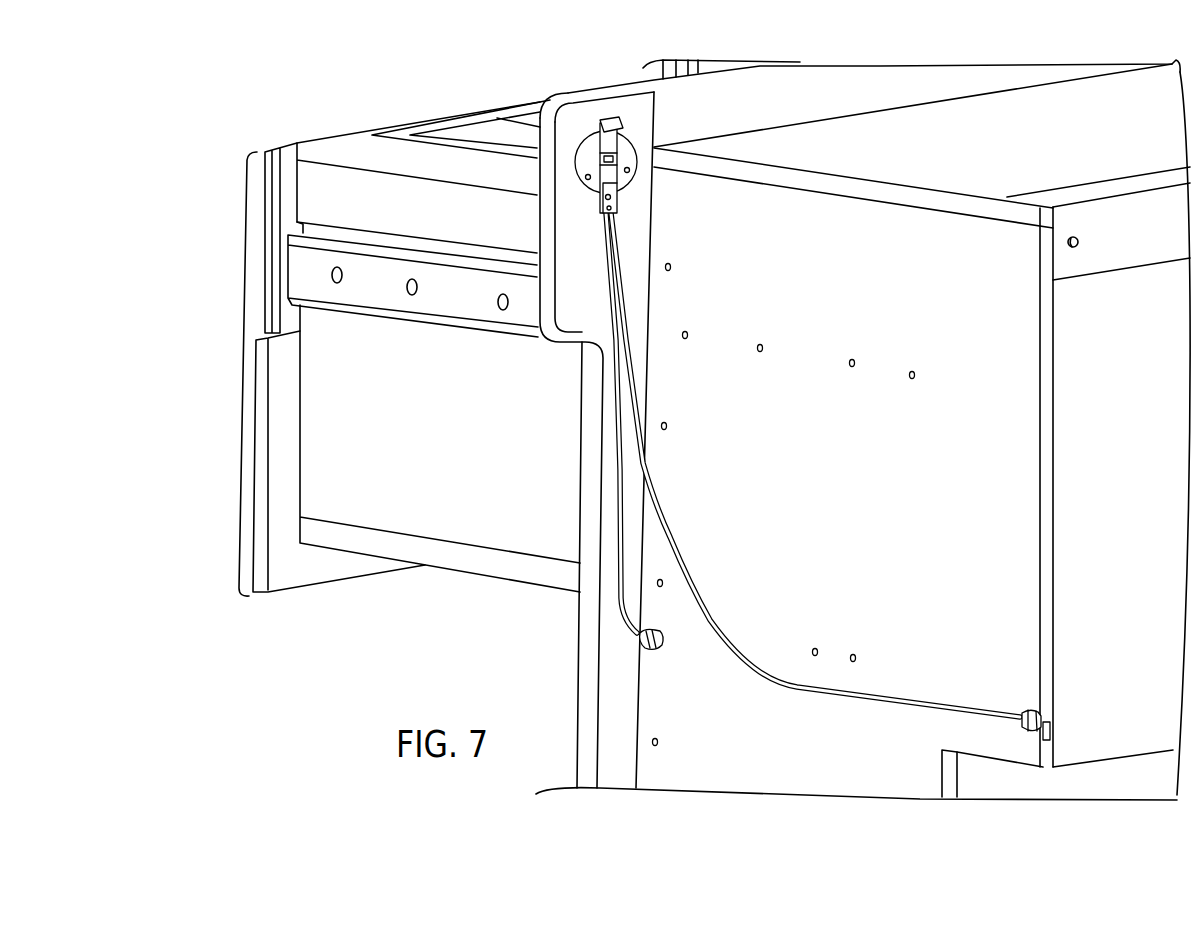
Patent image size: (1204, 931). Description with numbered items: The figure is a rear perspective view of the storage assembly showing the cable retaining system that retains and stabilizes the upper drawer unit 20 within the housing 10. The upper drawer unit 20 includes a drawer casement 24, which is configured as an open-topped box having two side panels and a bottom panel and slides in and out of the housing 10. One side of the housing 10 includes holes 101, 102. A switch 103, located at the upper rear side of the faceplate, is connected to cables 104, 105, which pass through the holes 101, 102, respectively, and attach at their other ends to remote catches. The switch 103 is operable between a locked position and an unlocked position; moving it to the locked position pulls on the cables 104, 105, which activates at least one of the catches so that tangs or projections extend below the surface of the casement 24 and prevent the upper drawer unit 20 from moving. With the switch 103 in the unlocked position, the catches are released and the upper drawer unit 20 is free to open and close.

The housing 10 is at (976, 398).
The upper drawer unit 20 is at (247, 359).
The drawer casement 24 is at (445, 438).
The hole 101 is at (1018, 738).
The hole 102 is at (658, 658).
The switch 103 is at (583, 202).
The cable 104 is at (836, 675).
The cable 105 is at (632, 566).